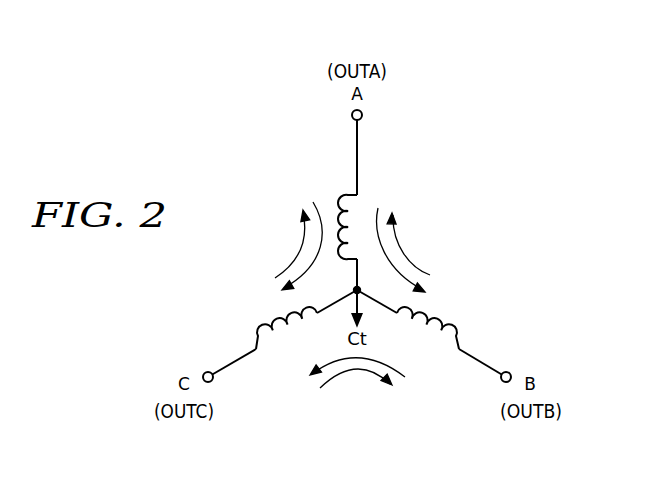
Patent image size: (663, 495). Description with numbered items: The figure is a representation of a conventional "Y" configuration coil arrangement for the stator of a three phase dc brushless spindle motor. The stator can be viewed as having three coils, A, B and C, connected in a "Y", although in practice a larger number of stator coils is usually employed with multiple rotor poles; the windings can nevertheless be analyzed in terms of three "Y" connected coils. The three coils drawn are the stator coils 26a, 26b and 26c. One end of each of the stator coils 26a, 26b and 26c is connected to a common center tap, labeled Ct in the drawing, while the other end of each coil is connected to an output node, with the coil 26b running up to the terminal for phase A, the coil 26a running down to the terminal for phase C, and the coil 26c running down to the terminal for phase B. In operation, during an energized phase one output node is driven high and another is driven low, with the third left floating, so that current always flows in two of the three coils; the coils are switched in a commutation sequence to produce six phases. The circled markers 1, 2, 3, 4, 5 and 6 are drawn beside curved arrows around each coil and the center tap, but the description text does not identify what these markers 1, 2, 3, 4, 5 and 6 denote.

The stator coil 26a is at (270, 324).
The stator coil 26b is at (346, 200).
The stator coil 26c is at (447, 324).
The current direction / sensing position 1 is at (377, 237).
The current direction / sensing position 2 is at (323, 227).
The current direction / sensing position 3 is at (367, 358).
The current direction / sensing position 4 is at (405, 260).
The current direction / sensing position 5 is at (302, 250).
The current direction / sensing position 6 is at (335, 375).